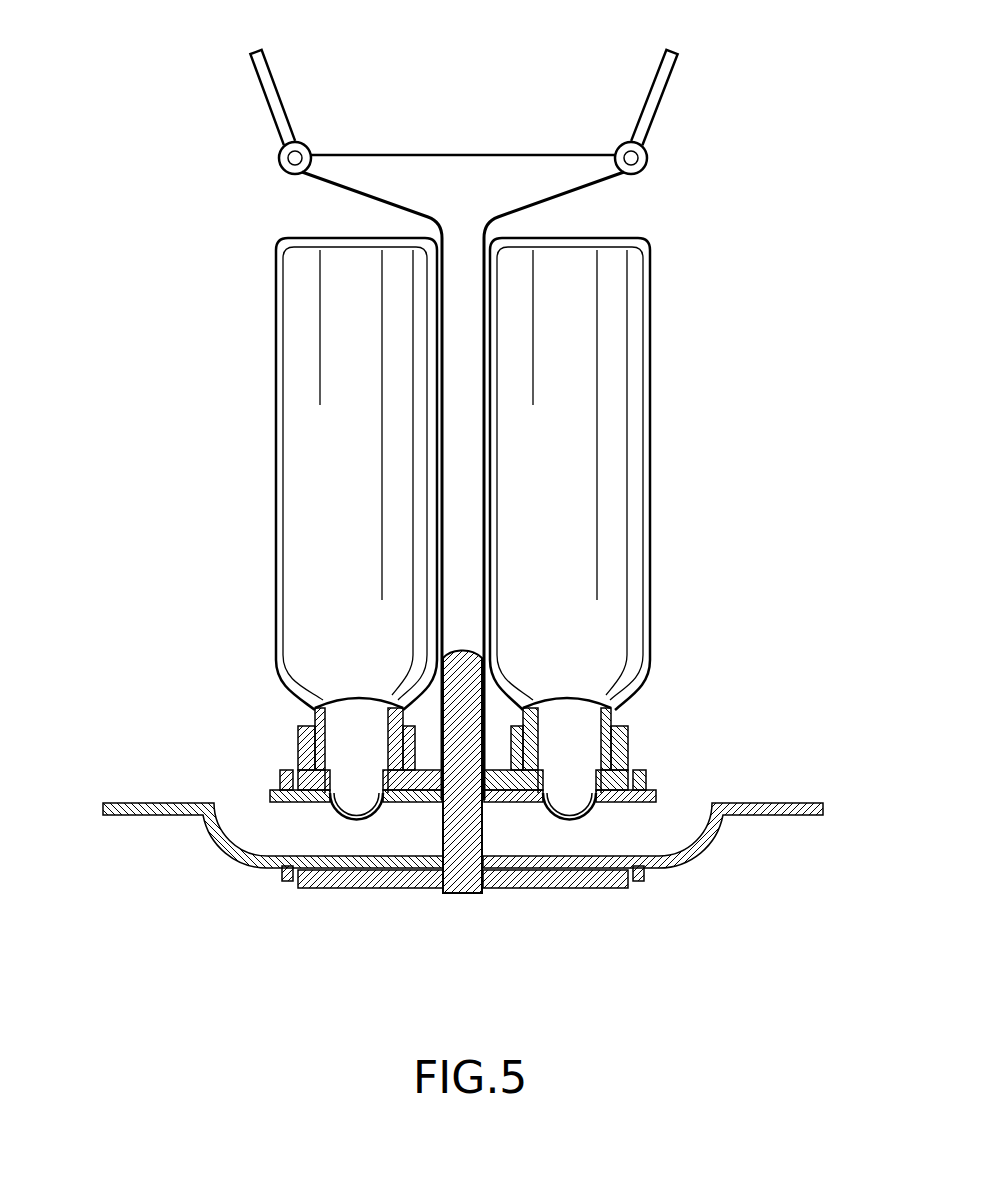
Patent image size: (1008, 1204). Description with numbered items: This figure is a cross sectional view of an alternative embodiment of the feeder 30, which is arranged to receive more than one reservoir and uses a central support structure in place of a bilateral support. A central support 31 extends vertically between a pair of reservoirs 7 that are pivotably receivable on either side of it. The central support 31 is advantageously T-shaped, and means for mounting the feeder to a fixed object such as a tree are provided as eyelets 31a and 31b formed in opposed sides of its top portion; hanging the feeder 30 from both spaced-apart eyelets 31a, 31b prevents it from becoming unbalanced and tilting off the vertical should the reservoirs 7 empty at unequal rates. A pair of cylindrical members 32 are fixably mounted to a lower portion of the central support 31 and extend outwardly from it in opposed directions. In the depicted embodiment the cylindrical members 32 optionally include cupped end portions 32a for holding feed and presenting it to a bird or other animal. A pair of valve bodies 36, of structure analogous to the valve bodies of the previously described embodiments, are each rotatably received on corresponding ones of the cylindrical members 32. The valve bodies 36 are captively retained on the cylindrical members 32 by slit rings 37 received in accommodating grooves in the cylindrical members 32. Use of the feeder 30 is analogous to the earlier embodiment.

The reservoir 7 is at (303, 343).
The feeder 30 is at (747, 187).
The central support 31 is at (465, 182).
The eyelet 31a is at (308, 157).
The eyelet 31b is at (618, 147).
The cylindrical member 32 is at (218, 848).
The cupped end portion 32a is at (702, 817).
The valve body 36 is at (367, 888).
The slit ring 37 is at (287, 880).